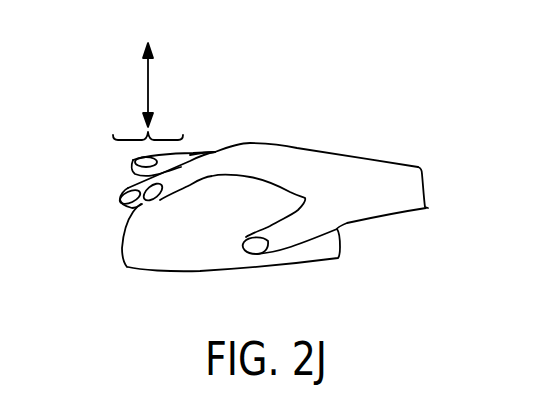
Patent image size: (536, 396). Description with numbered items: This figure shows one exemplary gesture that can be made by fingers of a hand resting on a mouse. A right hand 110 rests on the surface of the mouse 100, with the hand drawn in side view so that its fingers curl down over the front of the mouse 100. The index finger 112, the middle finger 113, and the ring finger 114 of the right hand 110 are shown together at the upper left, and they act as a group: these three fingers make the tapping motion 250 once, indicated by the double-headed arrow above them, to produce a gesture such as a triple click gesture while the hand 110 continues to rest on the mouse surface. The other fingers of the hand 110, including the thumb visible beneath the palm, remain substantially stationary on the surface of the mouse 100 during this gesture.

The mouse 100 is at (167, 258).
The right hand 110 is at (348, 172).
The index finger 112 is at (213, 158).
The middle finger 113 is at (120, 208).
The ring finger 114 is at (133, 170).
The tapping motion 250 is at (149, 77).